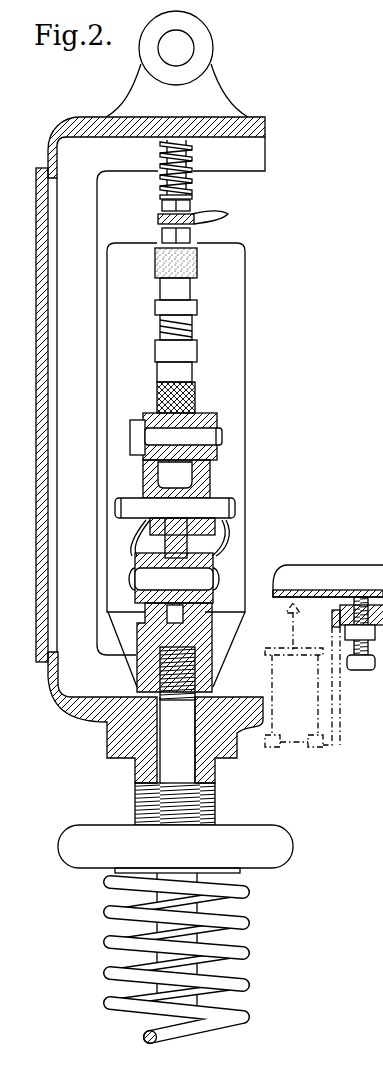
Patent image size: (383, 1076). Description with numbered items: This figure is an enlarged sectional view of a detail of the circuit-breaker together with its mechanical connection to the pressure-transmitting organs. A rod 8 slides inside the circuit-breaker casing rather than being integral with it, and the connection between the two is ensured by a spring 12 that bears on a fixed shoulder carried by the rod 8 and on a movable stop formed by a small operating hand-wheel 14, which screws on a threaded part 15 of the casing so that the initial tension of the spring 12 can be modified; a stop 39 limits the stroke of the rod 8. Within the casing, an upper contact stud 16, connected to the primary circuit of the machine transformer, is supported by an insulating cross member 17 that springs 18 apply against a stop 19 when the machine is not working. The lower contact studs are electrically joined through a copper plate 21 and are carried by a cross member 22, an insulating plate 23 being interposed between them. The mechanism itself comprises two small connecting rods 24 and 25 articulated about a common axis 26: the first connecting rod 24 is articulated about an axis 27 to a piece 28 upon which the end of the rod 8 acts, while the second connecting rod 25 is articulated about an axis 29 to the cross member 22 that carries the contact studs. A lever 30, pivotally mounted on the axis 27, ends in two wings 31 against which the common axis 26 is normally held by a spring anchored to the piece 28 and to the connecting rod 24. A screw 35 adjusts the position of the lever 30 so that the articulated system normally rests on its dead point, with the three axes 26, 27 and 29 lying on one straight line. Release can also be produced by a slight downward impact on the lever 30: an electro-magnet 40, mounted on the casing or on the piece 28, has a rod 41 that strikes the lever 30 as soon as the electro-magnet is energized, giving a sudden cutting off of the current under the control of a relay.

The rod 8 is at (185, 757).
The spring 12 is at (189, 963).
The operating hand-wheel 14 is at (275, 847).
The threaded part 15 is at (205, 805).
The upper contact stud 16 is at (197, 308).
The insulating cross member 17 is at (197, 270).
The spring 18 is at (191, 186).
The stop 19 is at (160, 326).
The copper plate 21 is at (157, 382).
The cross member 22 is at (175, 475).
The insulating plate 23 is at (186, 403).
The connecting rod 24 is at (178, 538).
The connecting rod 25 is at (190, 479).
The common axis 26 is at (205, 508).
The axis 27 is at (210, 583).
The piece 28 is at (203, 655).
The axis 29 is at (205, 437).
The lever 30 is at (338, 572).
The wings 31 is at (132, 540).
The screw 35 is at (358, 670).
The stop 39 is at (205, 975).
The electro-magnet 40 is at (309, 733).
The rod 41 is at (296, 640).